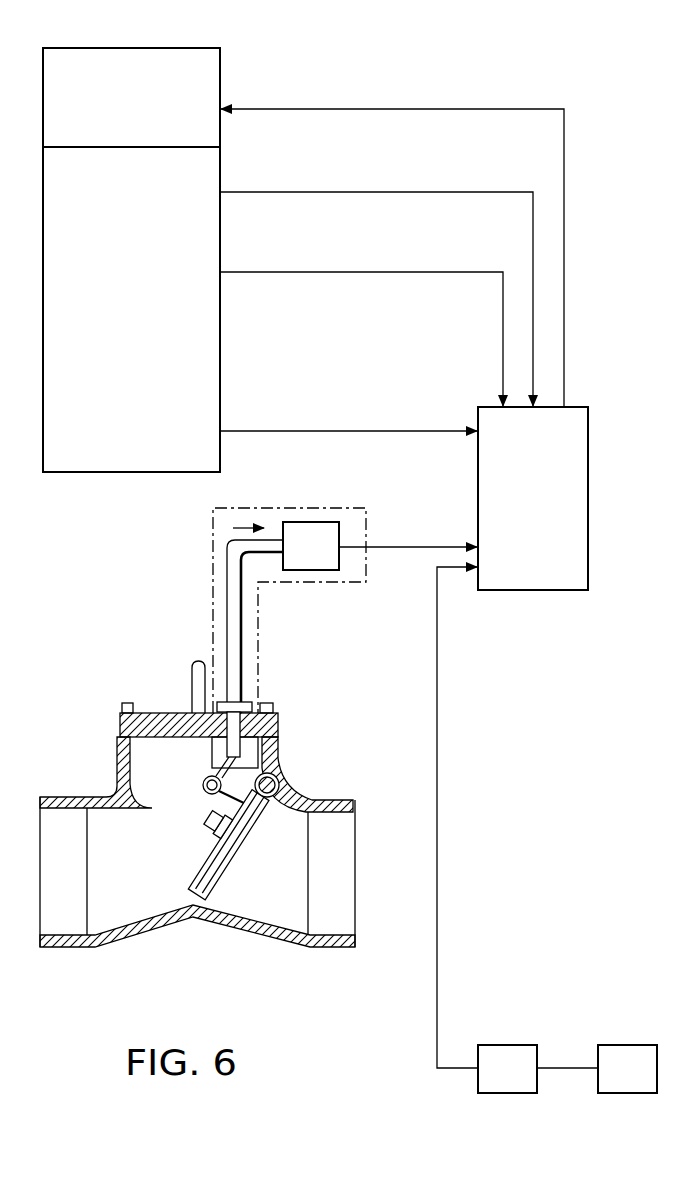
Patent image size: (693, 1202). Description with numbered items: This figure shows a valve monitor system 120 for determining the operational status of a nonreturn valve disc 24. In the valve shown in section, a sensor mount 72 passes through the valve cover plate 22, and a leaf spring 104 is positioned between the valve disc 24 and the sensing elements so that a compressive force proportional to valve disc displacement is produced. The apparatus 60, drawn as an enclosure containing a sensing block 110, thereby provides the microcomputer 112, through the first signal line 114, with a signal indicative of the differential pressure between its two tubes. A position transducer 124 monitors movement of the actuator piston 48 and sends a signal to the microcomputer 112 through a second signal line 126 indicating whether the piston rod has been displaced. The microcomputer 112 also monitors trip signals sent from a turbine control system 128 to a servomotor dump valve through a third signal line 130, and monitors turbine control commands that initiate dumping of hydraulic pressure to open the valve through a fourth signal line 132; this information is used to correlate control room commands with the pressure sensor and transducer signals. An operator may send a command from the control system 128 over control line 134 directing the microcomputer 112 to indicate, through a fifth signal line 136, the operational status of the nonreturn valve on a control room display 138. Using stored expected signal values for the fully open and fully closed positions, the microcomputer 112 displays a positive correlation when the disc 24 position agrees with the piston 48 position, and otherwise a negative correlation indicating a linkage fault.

The valve cover plate 22 is at (160, 713).
The nonreturn valve disc 24 is at (214, 878).
The actuator piston 48 is at (645, 1081).
The apparatus 60 is at (212, 537).
The sensor mount 72 is at (246, 680).
The leaf spring 104 is at (203, 788).
The sensor transducer 110 is at (330, 558).
The microcomputer 112 is at (512, 515).
The first signal line 114 is at (425, 547).
The valve monitor system 120 is at (563, 78).
The position transducer 124 is at (527, 1081).
The second signal line 126 is at (437, 780).
The turbine control system 128 is at (112, 310).
The third signal line 130 is at (366, 431).
The fourth signal line 132 is at (367, 272).
The control line 134 is at (400, 192).
The fifth signal line 136 is at (113, 115).
The control room display 138 is at (390, 109).